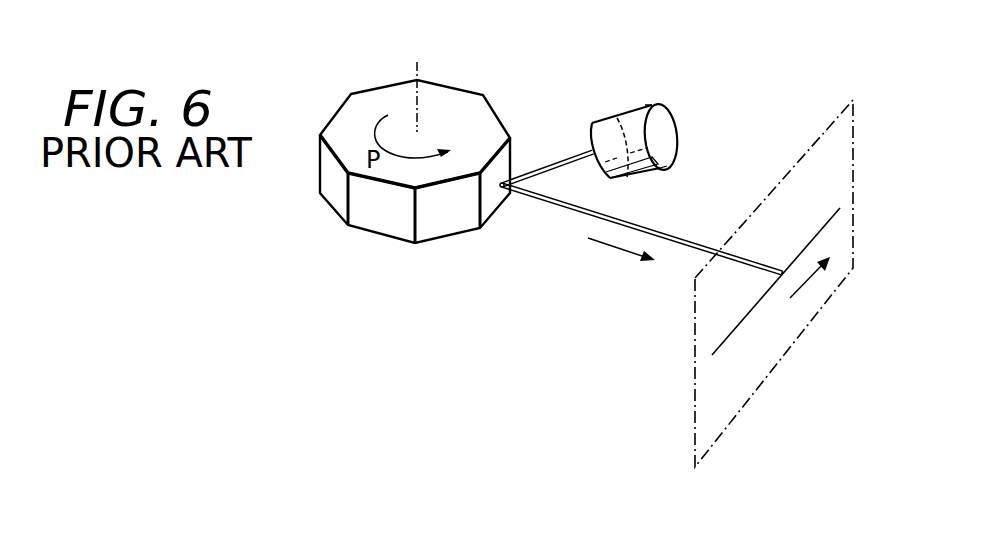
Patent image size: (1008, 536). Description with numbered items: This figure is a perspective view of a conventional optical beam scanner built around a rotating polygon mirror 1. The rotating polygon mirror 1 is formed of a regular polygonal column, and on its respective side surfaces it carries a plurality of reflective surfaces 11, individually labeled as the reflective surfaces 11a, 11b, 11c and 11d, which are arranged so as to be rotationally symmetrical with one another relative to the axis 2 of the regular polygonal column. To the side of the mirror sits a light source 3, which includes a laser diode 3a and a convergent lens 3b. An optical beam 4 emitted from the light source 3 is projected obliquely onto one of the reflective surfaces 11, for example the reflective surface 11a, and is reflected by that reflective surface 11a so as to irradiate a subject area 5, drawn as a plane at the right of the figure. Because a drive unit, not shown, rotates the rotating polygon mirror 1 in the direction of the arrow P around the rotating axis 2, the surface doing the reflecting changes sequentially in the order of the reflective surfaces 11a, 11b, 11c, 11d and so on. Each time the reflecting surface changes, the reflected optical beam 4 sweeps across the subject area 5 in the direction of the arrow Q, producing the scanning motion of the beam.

The rotating polygon mirror 1 is at (351, 93).
The axis of the regular polygonal column 2 is at (423, 70).
The light source 3 is at (634, 116).
The laser diode 3a is at (658, 168).
The convergent lens 3b is at (625, 177).
The optical beam 4 is at (568, 210).
The subject area 5 is at (853, 245).
The reflective surfaces 11 is at (507, 317).
The reflective surface 11a is at (493, 203).
The reflective surface 11b is at (432, 232).
The reflective surface 11c is at (377, 223).
The reflective surface 11d is at (335, 197).